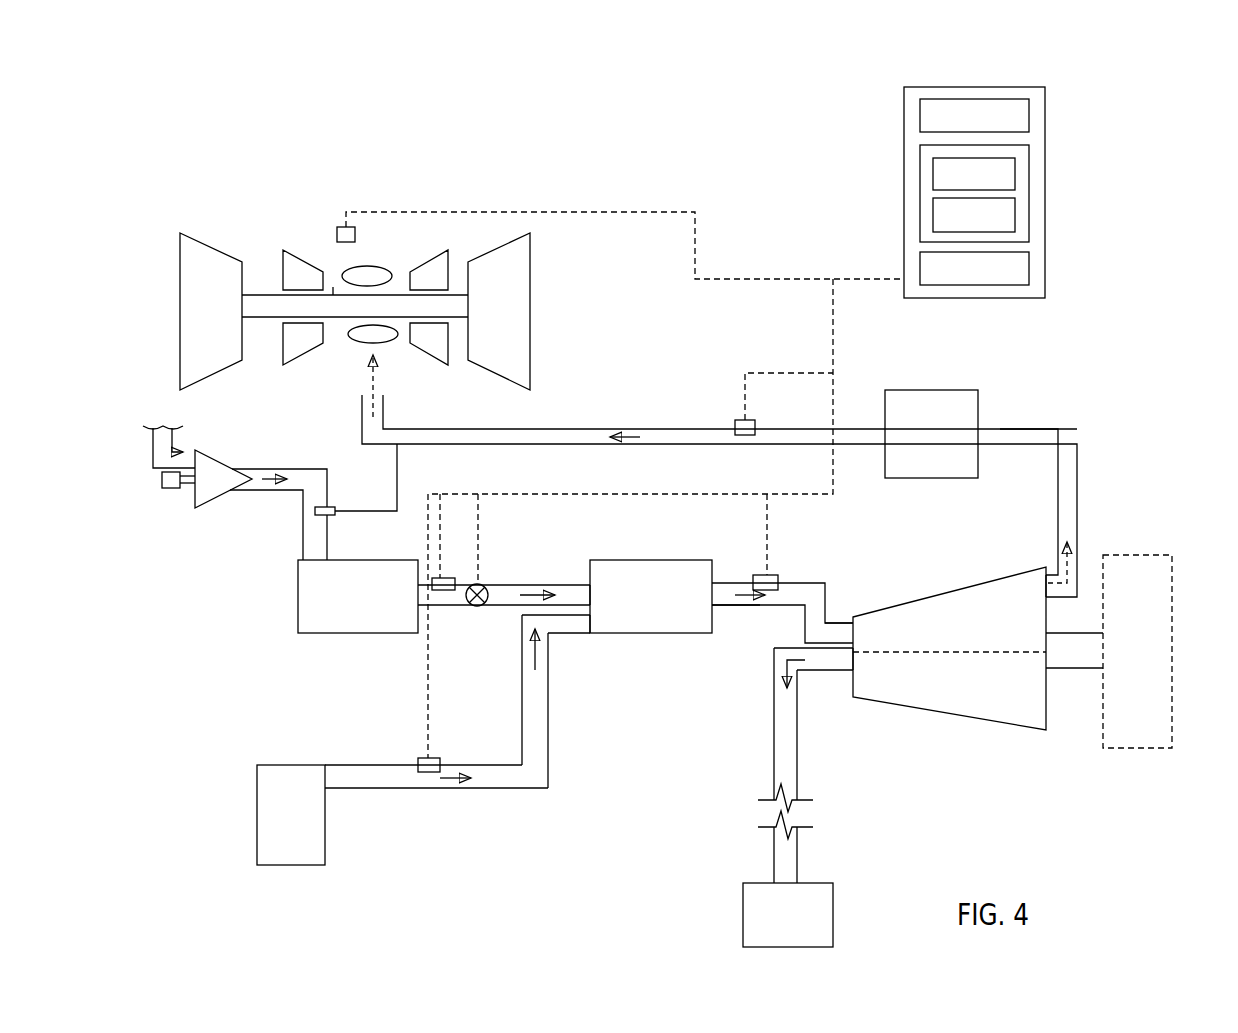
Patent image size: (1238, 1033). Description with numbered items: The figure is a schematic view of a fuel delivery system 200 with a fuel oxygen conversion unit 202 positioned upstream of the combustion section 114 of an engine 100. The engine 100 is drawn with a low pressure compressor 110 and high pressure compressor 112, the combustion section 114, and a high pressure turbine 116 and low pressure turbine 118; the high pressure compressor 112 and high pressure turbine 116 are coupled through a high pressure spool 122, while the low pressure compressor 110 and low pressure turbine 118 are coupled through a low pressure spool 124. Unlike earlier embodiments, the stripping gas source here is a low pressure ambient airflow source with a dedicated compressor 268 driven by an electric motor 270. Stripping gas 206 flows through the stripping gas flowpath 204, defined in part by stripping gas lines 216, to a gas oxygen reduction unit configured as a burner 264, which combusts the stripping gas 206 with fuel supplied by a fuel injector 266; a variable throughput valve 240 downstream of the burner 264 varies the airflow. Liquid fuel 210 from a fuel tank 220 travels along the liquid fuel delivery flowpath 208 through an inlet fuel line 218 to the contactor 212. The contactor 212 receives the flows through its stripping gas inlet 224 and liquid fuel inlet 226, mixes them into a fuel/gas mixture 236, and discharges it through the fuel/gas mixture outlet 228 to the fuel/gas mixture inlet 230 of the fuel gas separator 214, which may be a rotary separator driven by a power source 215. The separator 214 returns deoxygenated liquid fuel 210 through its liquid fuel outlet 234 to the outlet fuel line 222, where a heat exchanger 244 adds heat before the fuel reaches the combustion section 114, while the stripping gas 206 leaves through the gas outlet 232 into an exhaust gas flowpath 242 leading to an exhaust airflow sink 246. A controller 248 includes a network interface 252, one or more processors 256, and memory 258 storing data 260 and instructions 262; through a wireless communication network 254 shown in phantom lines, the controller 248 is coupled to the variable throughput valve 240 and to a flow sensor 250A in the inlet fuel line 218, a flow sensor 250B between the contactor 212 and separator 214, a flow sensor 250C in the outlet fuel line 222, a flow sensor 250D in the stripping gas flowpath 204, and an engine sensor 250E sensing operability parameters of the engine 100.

The engine 100 is at (237, 202).
The low pressure compressor 110 is at (226, 321).
The high pressure compressor 112 is at (308, 260).
The combustion section 114 is at (380, 251).
The high pressure turbine 116 is at (433, 257).
The low pressure turbine 118 is at (508, 321).
The high pressure spool 122 is at (333, 287).
The low pressure spool 124 is at (257, 320).
The fuel delivery system 200 is at (1149, 258).
The fuel oxygen conversion unit 202 is at (1127, 349).
The stripping gas flowpath 204 is at (298, 524).
The stripping gas 206 is at (268, 477).
The liquid fuel delivery flowpath 208 is at (523, 790).
The liquid fuel 210 is at (637, 425).
The contactor 212 is at (658, 560).
The fuel gas separator 214 is at (972, 585).
The power source 215 is at (1173, 615).
The stripping gas line 216 is at (303, 545).
The inlet fuel line 218 is at (550, 713).
The fuel tank 220 is at (285, 765).
The outlet fuel line 222 is at (1033, 427).
The stripping gas inlet 224 is at (585, 579).
The liquid fuel inlet 226 is at (583, 635).
The fuel/gas mixture outlet 228 is at (723, 600).
The fuel/gas mixture inlet 230 is at (831, 625).
The gas outlet 232 is at (839, 666).
The liquid fuel outlet 234 is at (1054, 594).
The fuel/gas mixture 236 is at (753, 605).
The variable throughput valve 240 is at (486, 584).
The exhaust gas flowpath 242 is at (770, 752).
The heat exchanger 244 is at (962, 388).
The exhaust airflow sink 246 is at (803, 927).
The controller 248 is at (1023, 87).
The flow sensor 250A is at (438, 758).
The flow sensor 250B is at (773, 575).
The flow sensor 250C is at (755, 423).
The flow sensor 250D is at (450, 578).
The engine sensor 250E is at (356, 238).
The network interface 252 is at (990, 280).
The wireless communication network 254 is at (754, 246).
The processor 256 is at (990, 128).
The memory 258 is at (1030, 153).
The data 260 is at (989, 186).
The instructions 262 is at (989, 226).
The burner 264 is at (357, 634).
The fuel injector 266 is at (330, 506).
The compressor 268 is at (212, 462).
The electric motor 270 is at (173, 490).